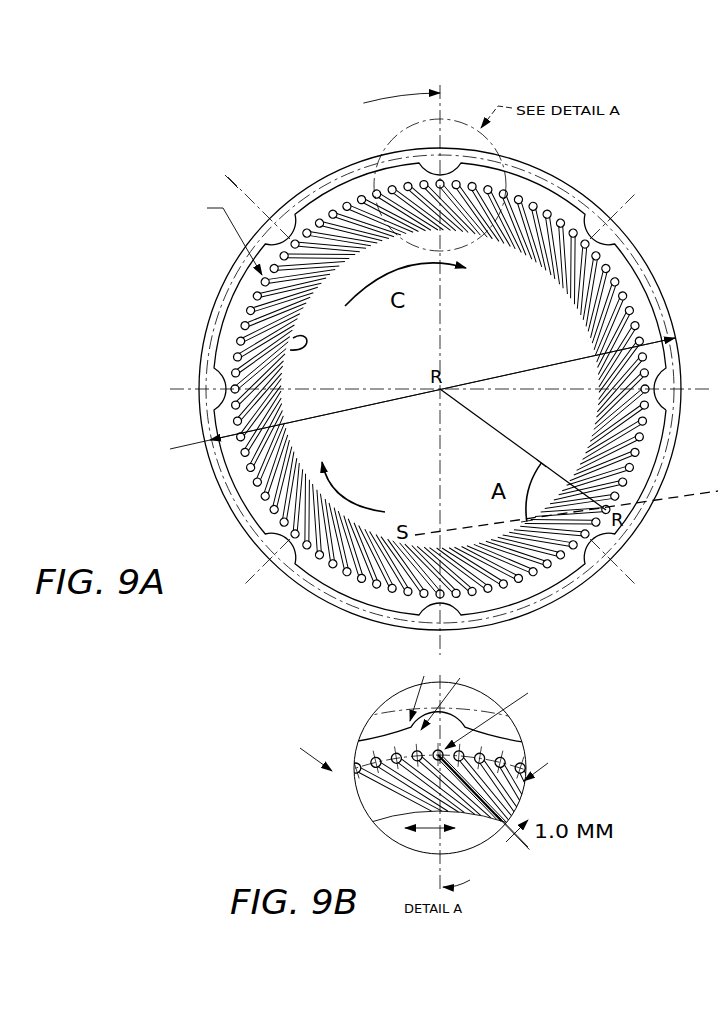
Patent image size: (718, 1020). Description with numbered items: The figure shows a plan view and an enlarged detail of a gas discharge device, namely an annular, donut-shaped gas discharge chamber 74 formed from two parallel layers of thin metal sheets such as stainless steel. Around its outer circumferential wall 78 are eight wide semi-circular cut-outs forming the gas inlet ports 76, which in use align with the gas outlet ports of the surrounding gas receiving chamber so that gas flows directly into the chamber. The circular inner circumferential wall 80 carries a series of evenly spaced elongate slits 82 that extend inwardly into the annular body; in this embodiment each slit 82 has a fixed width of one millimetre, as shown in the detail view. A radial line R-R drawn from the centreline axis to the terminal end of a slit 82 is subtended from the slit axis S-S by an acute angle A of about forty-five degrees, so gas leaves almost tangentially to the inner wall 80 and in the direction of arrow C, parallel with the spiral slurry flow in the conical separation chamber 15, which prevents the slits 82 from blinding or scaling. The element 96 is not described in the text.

The gas discharge chamber 74 is at (389, 377).
The gas inlet ports 76 is at (205, 393).
The outer circumferential wall 78 is at (543, 595).
The inner circumferential wall 80 is at (293, 338).
The slits 82 is at (363, 213).
The reference axis 96 is at (717, 286).
The conical separation chamber 15 is at (386, 449).